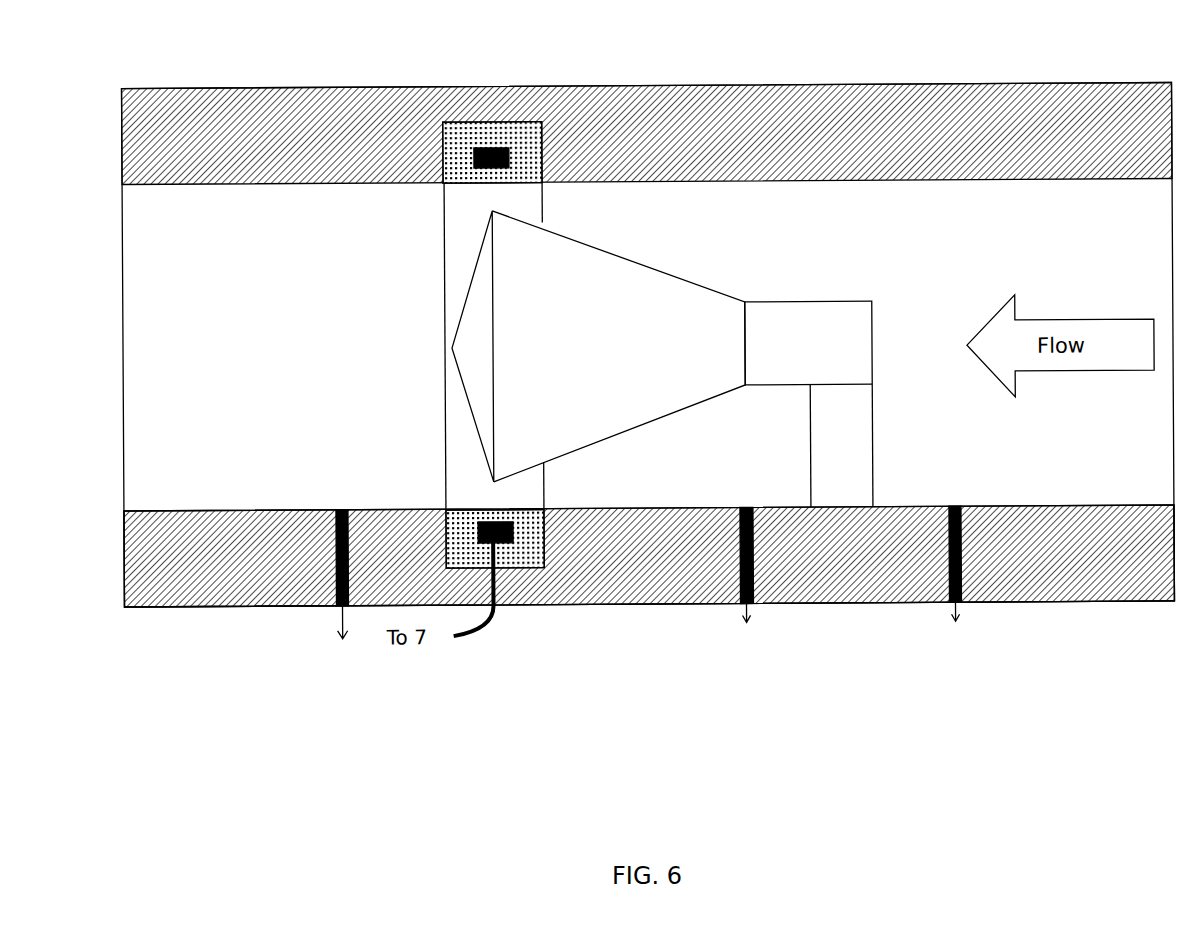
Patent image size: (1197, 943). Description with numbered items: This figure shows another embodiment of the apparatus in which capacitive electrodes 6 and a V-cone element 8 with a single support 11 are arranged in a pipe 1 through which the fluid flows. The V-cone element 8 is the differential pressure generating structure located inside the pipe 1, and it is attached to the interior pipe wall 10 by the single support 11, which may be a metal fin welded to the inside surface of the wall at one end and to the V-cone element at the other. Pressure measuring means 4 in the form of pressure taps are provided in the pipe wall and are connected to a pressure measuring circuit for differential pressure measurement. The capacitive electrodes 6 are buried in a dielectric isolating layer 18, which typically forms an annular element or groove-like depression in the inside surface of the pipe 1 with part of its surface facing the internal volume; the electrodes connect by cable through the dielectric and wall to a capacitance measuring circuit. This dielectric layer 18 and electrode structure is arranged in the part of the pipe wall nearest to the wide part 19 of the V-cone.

The pipe 1 is at (243, 87).
The pressure measuring means 4 is at (334, 522).
The capacitive electrodes 6 is at (495, 146).
The V-cone element 8 is at (607, 343).
The interior pipe wall 10 is at (268, 508).
The support 11 is at (837, 440).
The dielectric isolating layer 18 is at (537, 130).
The wide part of the V-cone 19 is at (508, 272).